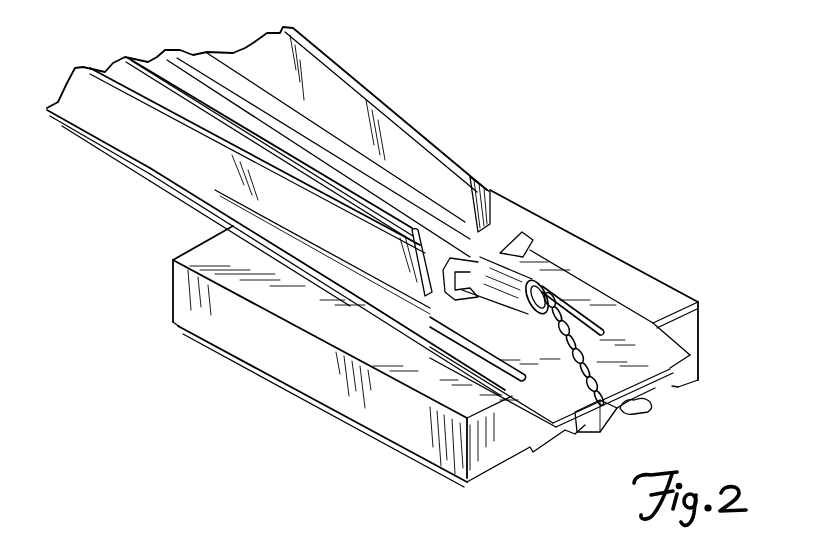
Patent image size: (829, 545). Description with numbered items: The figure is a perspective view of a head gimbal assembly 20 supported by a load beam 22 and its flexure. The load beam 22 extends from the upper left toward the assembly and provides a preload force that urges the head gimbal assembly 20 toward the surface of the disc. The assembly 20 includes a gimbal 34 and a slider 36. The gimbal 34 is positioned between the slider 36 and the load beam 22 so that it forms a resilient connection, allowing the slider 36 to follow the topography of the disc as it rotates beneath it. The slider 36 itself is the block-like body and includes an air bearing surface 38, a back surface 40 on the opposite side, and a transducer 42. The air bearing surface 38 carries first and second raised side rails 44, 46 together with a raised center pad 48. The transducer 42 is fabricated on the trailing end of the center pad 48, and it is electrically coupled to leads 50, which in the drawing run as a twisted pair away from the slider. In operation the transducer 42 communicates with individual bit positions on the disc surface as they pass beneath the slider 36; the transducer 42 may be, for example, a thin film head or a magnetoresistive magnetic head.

The head gimbal assembly 20 is at (533, 160).
The load beam 22 is at (104, 147).
The gimbal 34 is at (590, 298).
The slider 36 is at (330, 388).
The air bearing surface 38 is at (375, 440).
The back surface 40 is at (317, 322).
The transducer 42 is at (598, 432).
The first raised side rail 44 is at (496, 464).
The second raised side rail 46 is at (685, 385).
The raised center pad 48 is at (620, 410).
The leads 50 is at (594, 377).